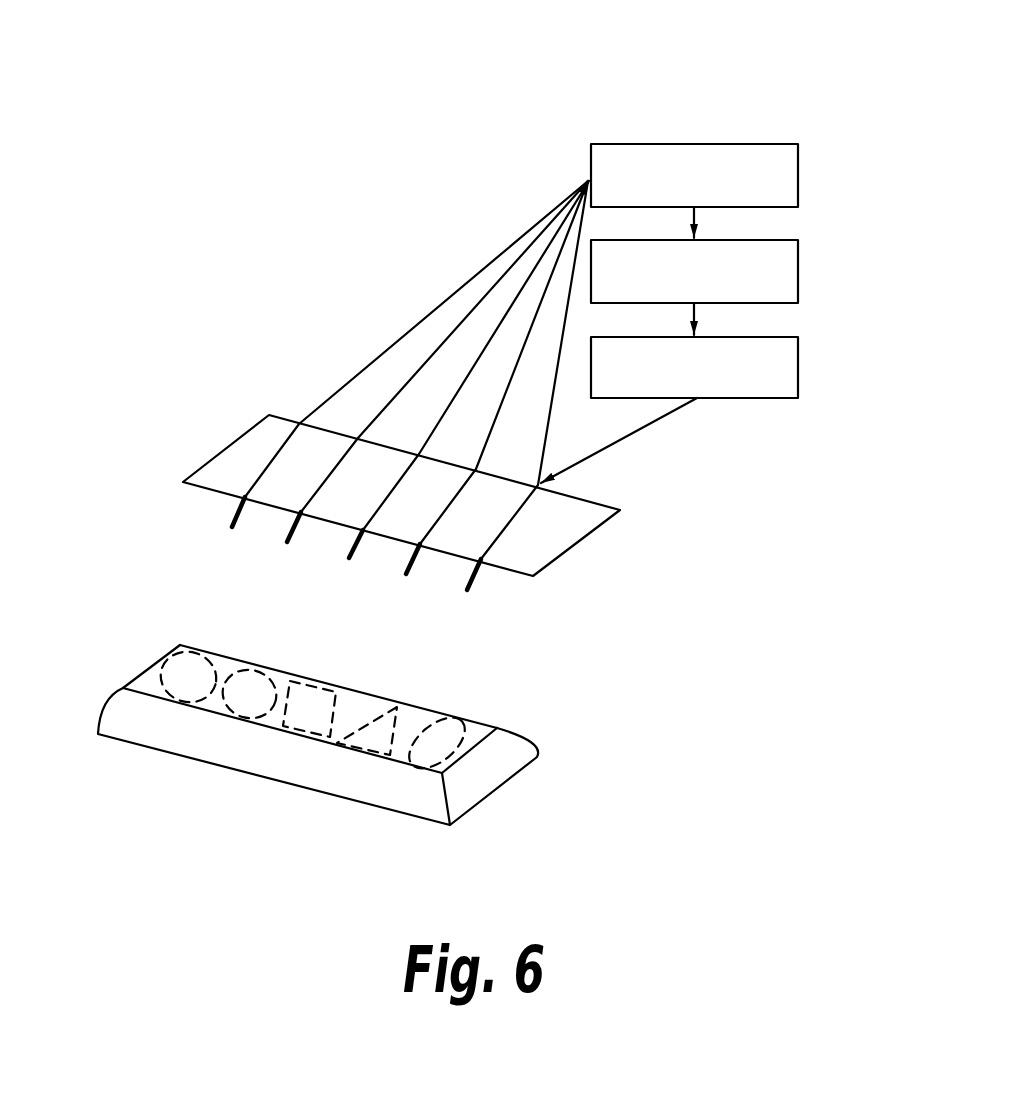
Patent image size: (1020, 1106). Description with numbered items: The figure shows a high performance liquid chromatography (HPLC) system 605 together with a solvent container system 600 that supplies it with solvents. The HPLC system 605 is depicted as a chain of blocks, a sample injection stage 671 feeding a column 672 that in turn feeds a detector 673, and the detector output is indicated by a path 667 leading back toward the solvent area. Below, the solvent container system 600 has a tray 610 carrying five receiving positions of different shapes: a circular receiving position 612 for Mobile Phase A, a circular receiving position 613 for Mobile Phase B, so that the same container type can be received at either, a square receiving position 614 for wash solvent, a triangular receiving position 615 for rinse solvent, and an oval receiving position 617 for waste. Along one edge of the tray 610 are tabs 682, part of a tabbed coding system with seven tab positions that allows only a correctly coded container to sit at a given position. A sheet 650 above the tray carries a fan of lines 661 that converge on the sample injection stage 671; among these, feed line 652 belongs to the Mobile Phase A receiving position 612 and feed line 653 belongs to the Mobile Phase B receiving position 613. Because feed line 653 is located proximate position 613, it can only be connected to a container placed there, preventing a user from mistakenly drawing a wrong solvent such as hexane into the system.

The solvent container system 600 is at (227, 275).
The high performance liquid chromatography (HPLC) system 605 is at (703, 117).
The tray 610 is at (128, 672).
The circular receiving position 612 is at (163, 705).
The circular receiving position 613 is at (233, 723).
The square receiving position 614 is at (300, 742).
The triangular receiving position 615 is at (365, 755).
The oval receiving position 617 is at (417, 773).
The sampling sheet 650 is at (232, 430).
The feed line 652 is at (217, 513).
The feed line 653 is at (280, 547).
The sample transfer paths 661 is at (413, 313).
The detector output path 667 is at (631, 449).
The sample injection unit 671 is at (806, 173).
The column 672 is at (804, 270).
The detector 673 is at (804, 367).
The tabs 682 is at (180, 644).